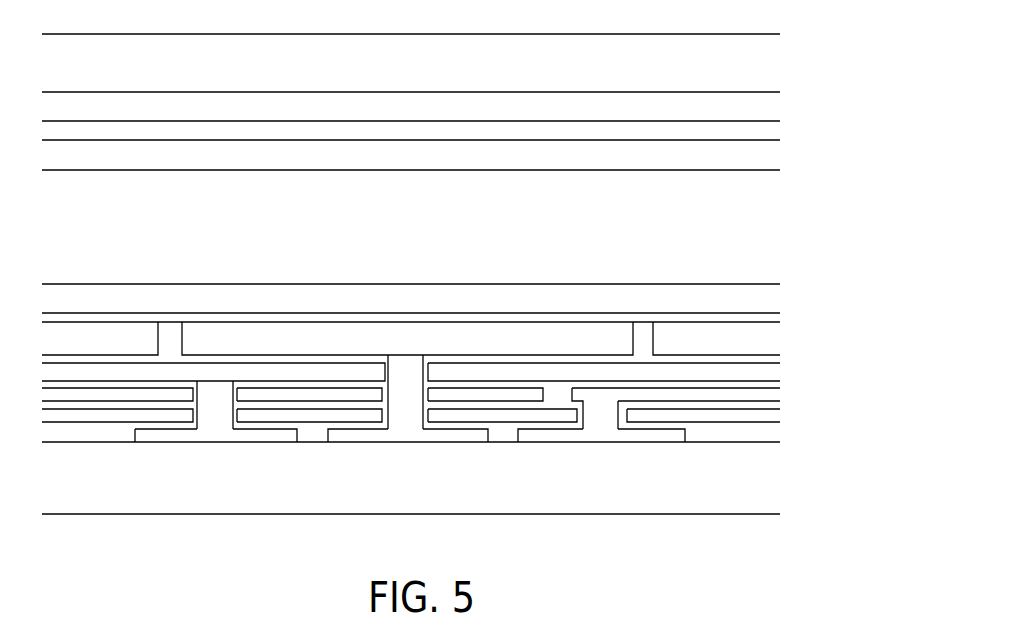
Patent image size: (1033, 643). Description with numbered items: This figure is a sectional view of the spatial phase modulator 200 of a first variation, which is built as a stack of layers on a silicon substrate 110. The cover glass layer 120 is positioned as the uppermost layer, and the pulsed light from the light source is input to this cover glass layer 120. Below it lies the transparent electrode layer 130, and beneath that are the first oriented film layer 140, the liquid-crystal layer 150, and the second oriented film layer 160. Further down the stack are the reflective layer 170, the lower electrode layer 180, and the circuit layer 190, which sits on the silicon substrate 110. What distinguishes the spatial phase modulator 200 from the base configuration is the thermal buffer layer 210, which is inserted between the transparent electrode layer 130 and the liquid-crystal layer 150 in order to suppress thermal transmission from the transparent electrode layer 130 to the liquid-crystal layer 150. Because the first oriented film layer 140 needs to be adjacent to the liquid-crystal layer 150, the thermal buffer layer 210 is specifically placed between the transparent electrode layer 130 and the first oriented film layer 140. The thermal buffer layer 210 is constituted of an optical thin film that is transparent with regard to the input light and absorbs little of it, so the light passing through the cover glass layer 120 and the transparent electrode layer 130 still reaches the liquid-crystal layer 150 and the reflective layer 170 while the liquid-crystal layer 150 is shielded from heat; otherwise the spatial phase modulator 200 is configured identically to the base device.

The silicon substrate 110 is at (776, 483).
The cover glass layer 120 is at (774, 60).
The transparent electrode layer 130 is at (775, 107).
The first oriented film layer 140 is at (775, 156).
The liquid-crystal layer 150 is at (774, 224).
The second oriented film layer 160 is at (775, 298).
The reflective layer 170 is at (775, 318).
The lower electrode layer 180 is at (774, 342).
The circuit layer 190 is at (793, 442).
The spatial phase modulator 200 is at (874, 9).
The thermal buffer layer 210 is at (775, 131).